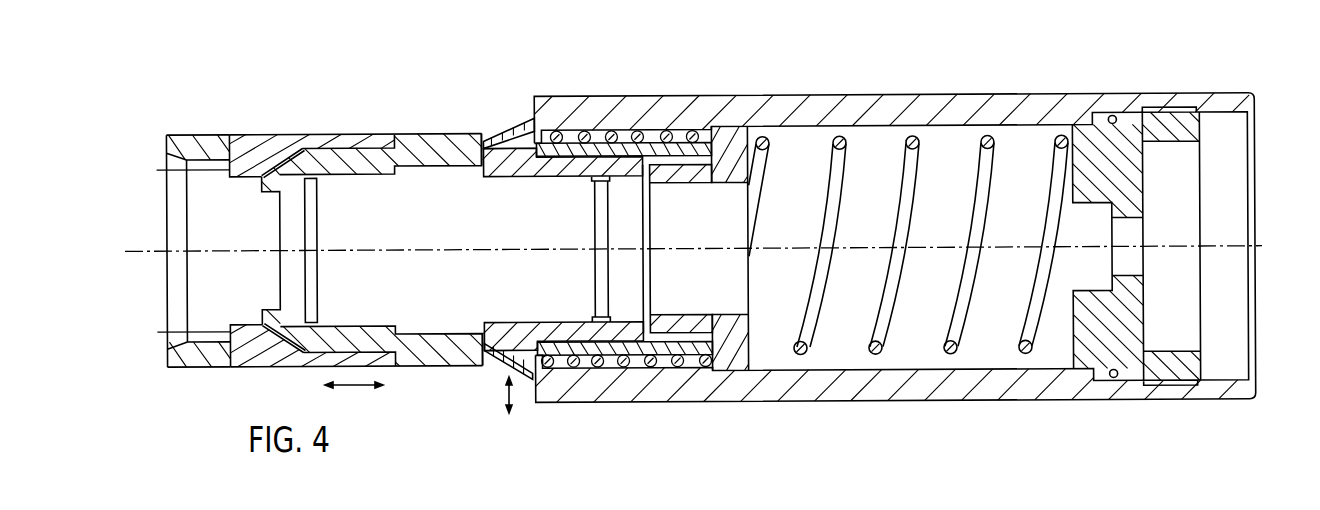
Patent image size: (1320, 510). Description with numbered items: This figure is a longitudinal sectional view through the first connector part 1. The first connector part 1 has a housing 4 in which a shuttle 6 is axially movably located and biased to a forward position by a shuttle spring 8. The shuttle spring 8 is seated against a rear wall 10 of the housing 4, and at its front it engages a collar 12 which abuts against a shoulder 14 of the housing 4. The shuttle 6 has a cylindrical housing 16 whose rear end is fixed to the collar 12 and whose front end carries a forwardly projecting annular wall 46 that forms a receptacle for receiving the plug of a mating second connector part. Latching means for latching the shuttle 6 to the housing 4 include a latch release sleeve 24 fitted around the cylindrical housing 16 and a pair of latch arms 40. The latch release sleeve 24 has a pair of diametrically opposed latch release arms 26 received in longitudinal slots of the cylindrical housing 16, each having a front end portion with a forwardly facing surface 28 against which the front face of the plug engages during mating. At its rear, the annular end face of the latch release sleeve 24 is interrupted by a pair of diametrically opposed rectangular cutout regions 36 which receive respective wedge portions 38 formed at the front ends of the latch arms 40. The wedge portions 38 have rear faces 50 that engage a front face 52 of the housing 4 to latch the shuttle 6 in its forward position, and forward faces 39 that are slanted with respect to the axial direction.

The first connector part 1 is at (519, 75).
The housing 4 is at (942, 100).
The shuttle 6 is at (239, 375).
The shuttle spring 8 is at (946, 345).
The rear wall 10 is at (1095, 133).
The collar 12 is at (738, 130).
The shoulder 14 is at (722, 368).
The cylindrical housing 16 is at (437, 150).
The latch release sleeve 24 is at (268, 125).
The latch release arms 26 is at (247, 145).
The forwardly facing surface 28 is at (177, 249).
The rectangular cutout regions 36 is at (481, 143).
The wedge portions 38 is at (519, 127).
The forward faces 39 is at (505, 372).
The latch arms 40 is at (600, 130).
The annular wall 46 is at (194, 366).
The rear faces 50 is at (544, 150).
The front face 52 is at (537, 97).